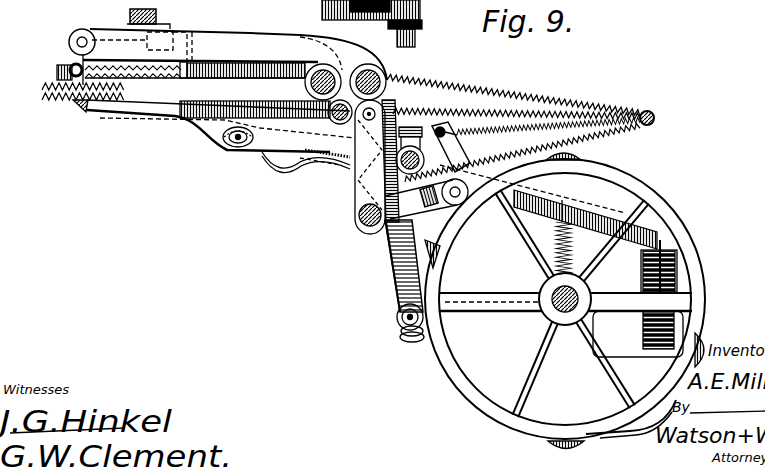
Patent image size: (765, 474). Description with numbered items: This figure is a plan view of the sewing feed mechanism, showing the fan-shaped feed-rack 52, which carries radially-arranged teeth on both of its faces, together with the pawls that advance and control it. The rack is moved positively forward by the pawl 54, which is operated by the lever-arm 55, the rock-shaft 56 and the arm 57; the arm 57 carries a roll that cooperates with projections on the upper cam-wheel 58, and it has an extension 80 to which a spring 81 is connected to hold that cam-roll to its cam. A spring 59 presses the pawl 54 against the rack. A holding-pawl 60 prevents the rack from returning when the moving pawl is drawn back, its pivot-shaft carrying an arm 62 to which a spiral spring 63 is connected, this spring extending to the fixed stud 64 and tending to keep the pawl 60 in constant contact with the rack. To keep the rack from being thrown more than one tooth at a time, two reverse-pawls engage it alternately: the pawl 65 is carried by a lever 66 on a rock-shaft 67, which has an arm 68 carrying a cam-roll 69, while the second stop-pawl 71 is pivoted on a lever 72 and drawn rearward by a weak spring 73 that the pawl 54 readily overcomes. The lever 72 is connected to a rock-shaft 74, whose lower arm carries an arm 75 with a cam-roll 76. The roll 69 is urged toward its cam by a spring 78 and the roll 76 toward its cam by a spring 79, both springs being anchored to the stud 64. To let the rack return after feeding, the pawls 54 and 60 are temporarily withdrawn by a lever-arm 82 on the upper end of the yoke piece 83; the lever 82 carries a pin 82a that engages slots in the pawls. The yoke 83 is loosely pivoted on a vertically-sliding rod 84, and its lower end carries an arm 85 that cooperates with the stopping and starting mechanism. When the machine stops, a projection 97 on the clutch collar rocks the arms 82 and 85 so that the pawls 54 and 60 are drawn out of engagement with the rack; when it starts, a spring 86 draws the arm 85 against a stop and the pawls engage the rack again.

The feed-rack 52 is at (118, 86).
The pawl 54 is at (88, 107).
The lever-arm 55 is at (356, 190).
The rock-shaft 56 is at (360, 219).
The arm 57 is at (453, 195).
The upper cam-wheel 58 is at (648, 201).
The spring 59 is at (290, 172).
The holding-pawl 60 is at (75, 108).
The arm 62 is at (360, 66).
The spiral spring 63 is at (514, 89).
The fixed stud 64 is at (655, 117).
The reverse-pawl 65 is at (58, 86).
The lever 66 is at (212, 66).
The rock-shaft 67 is at (308, 81).
The arm 68 is at (403, 260).
The cam-roll 69 is at (397, 320).
The second stop-pawl 71 is at (73, 63).
The lever 72 is at (200, 40).
The spring 73 is at (108, 70).
The rock-shaft 74 is at (388, 100).
The arm 75 is at (389, 245).
The cam-roll 76 is at (410, 342).
The spring 78 is at (600, 136).
The spring 79 is at (517, 102).
The extension 80 is at (468, 192).
The spring 81 is at (500, 137).
The lever-arm 82 is at (322, 160).
The pin 82a is at (233, 153).
The yoke piece 83 is at (407, 127).
The vertically-sliding rod 84 is at (443, 128).
The arm 85 is at (662, 227).
The spring 86 is at (558, 250).
The projection 97 is at (662, 245).